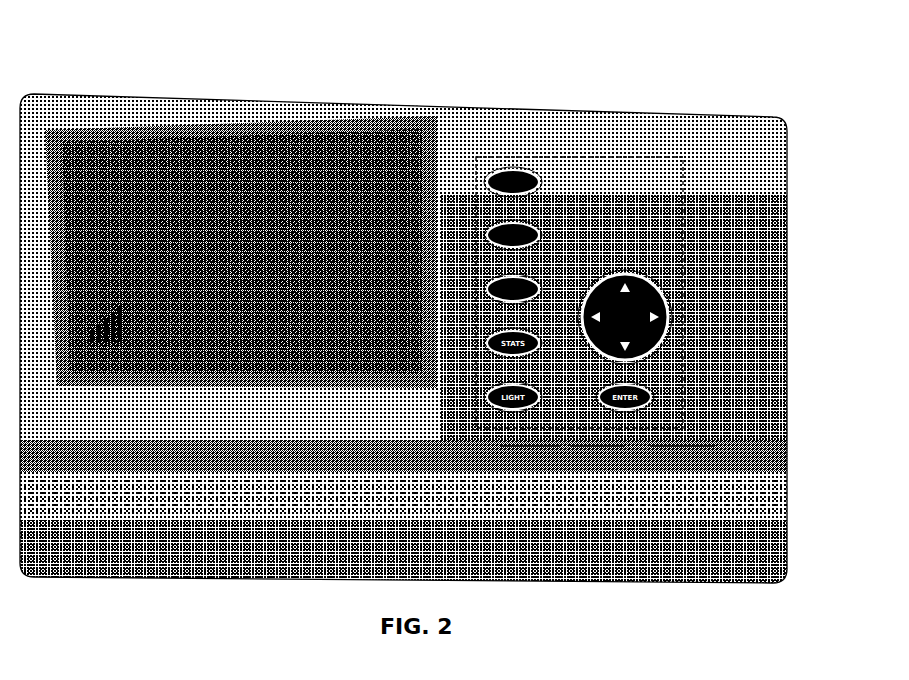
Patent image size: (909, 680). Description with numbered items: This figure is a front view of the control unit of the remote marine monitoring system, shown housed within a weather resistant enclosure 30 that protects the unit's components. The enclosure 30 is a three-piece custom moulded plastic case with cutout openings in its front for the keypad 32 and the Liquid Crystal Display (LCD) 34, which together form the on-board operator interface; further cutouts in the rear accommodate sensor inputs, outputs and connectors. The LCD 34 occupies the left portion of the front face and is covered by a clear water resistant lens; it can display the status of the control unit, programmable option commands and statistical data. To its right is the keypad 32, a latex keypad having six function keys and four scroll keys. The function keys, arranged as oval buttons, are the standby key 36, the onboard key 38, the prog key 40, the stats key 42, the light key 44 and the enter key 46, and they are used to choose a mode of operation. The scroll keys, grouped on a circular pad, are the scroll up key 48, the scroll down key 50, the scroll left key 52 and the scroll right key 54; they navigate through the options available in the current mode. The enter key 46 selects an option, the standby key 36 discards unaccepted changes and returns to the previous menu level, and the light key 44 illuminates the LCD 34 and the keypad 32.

The weather resistant enclosure 30 is at (787, 212).
The keypad 32 is at (577, 156).
The Liquid Crystal Display (LCD) 34 is at (370, 128).
The standby key 36 is at (514, 168).
The onboard key 38 is at (540, 231).
The prog key 40 is at (541, 289).
The stats key 42 is at (588, 470).
The light key 44 is at (527, 447).
The enter key 46 is at (673, 473).
The scroll up key 48 is at (671, 289).
The scroll down key 50 is at (672, 343).
The scroll left key 52 is at (673, 309).
The scroll right key 54 is at (687, 318).